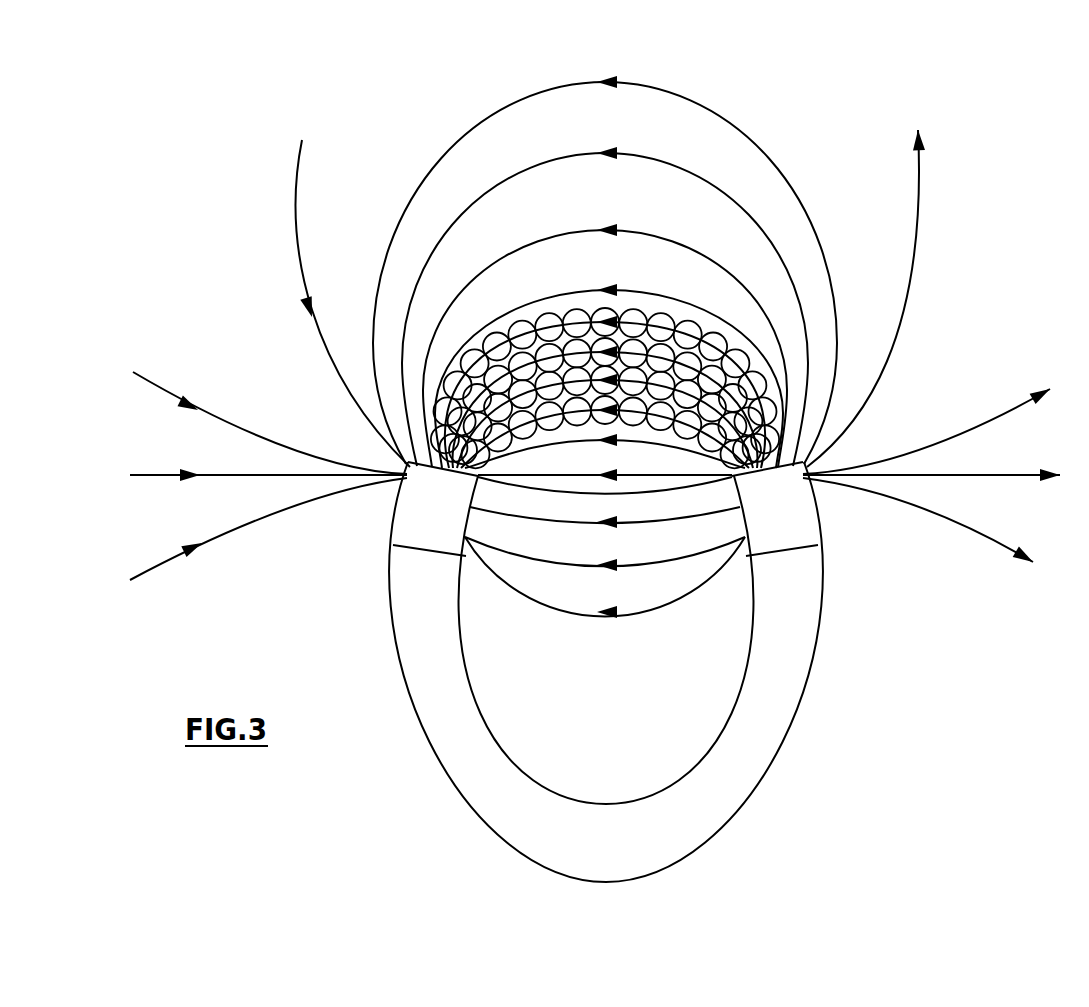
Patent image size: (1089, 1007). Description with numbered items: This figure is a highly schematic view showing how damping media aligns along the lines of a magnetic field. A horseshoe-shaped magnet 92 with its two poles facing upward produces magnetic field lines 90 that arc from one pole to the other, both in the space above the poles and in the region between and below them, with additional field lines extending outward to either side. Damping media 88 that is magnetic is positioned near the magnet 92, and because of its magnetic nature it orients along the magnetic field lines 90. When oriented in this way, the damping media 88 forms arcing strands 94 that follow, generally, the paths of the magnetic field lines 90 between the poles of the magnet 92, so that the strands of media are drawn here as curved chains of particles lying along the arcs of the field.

The damping media 88 is at (722, 325).
The magnetic field lines 90 is at (848, 104).
The magnet 92 is at (822, 627).
The arcing strands 94 is at (643, 290).